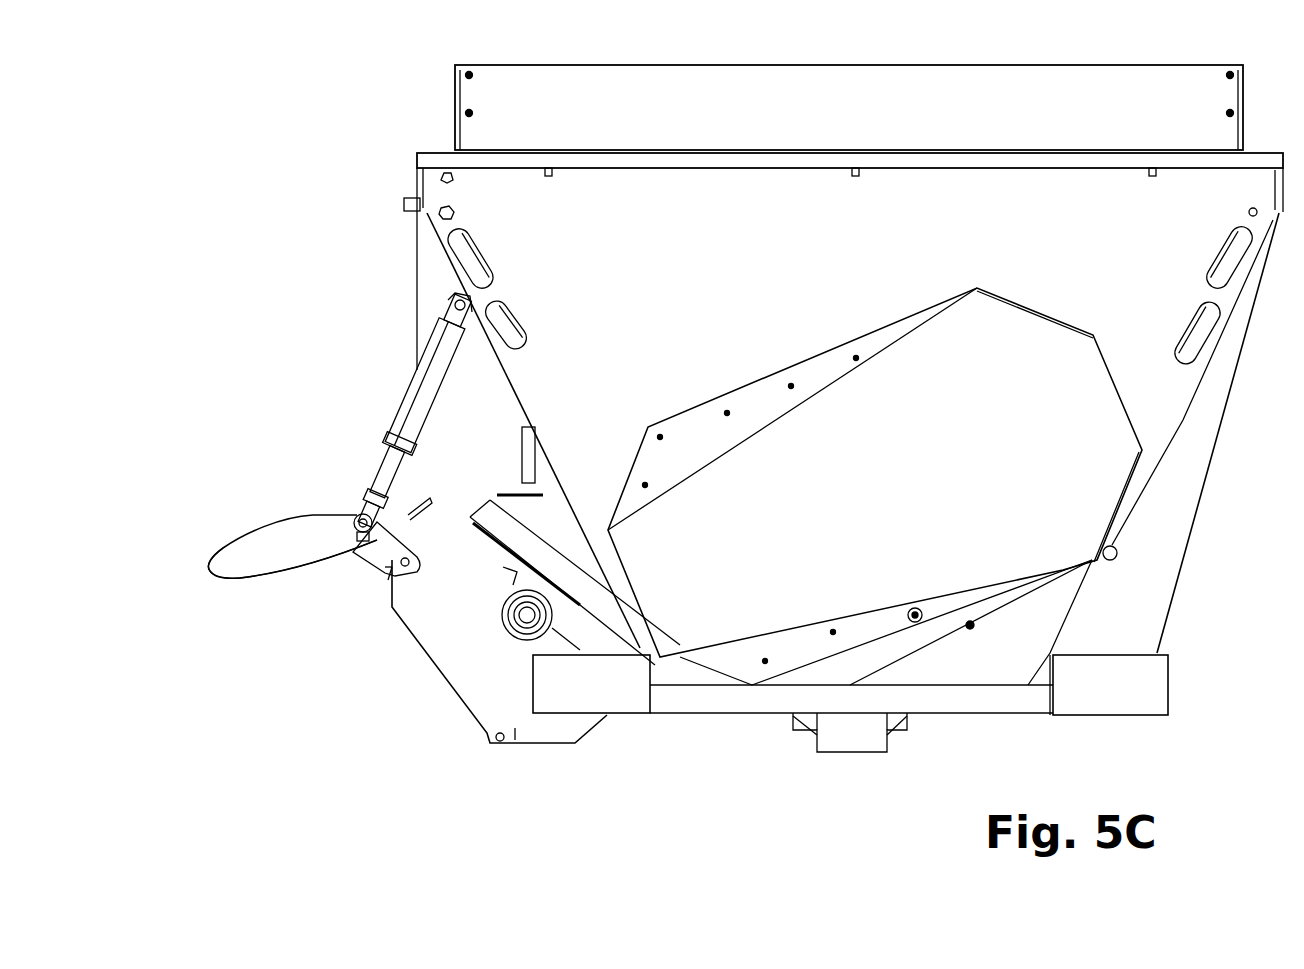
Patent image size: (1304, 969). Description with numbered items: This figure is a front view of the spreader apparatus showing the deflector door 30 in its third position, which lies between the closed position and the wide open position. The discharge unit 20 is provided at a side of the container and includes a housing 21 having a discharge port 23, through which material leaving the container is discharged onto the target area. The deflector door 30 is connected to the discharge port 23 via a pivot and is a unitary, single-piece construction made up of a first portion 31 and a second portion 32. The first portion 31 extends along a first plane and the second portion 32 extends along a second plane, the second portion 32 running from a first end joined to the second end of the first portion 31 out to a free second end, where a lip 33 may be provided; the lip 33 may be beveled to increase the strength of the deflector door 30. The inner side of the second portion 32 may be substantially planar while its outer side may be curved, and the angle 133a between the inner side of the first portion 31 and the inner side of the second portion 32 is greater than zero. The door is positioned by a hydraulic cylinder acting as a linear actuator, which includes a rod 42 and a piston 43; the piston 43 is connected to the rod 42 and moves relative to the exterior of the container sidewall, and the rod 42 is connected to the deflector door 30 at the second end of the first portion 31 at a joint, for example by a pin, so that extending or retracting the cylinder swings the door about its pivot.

The discharge unit 20 is at (457, 728).
The housing 21 is at (513, 730).
The discharge port 23 is at (410, 657).
The deflector door 30 is at (260, 575).
The first portion 31 is at (388, 565).
The second portion 32 is at (283, 540).
The lip 33 is at (205, 562).
The rod 42 is at (377, 467).
The piston 43 is at (417, 372).
The angle between inner sides 133a is at (360, 570).